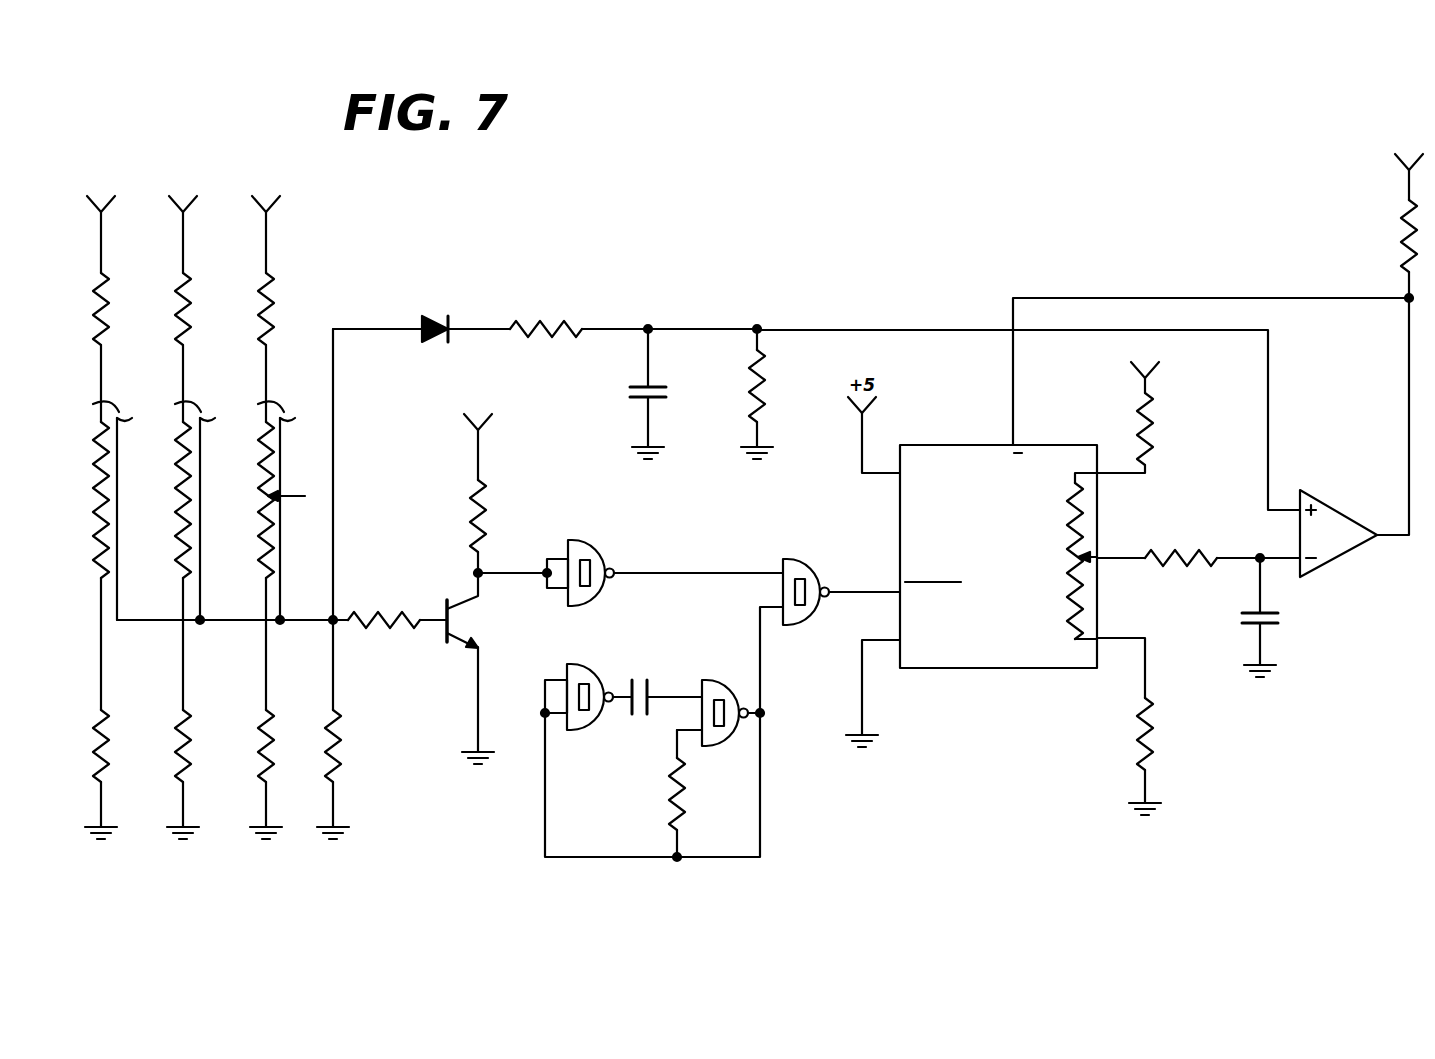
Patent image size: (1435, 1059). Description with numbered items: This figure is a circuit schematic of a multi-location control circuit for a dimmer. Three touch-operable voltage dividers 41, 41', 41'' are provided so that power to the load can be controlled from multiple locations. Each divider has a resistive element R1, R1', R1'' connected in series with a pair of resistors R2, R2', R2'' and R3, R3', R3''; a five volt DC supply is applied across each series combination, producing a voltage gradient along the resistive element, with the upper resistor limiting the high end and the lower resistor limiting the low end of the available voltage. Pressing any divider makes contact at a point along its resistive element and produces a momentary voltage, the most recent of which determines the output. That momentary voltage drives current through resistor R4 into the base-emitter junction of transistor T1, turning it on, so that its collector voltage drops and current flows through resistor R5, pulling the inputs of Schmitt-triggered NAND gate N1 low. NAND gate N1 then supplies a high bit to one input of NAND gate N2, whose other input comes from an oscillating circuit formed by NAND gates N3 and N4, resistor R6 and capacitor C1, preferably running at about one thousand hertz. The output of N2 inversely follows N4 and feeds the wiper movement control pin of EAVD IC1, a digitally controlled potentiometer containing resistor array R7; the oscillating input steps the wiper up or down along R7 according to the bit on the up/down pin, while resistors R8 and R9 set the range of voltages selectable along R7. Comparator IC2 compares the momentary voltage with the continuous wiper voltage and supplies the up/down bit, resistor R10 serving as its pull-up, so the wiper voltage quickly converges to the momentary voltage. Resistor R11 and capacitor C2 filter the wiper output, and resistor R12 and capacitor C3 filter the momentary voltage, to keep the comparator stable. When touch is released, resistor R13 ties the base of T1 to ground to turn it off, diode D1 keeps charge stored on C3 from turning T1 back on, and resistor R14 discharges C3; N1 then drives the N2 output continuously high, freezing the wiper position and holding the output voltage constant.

The membrane voltage divider 41 is at (117, 498).
The touch-operable voltage divider 41' is at (202, 498).
The touch-operable voltage divider 41'' is at (286, 498).
The resistive element R1 is at (85, 500).
The resistive element R1' is at (165, 500).
The resistive element R1'' is at (262, 500).
The resistor R2 is at (112, 256).
The resistor R2' is at (196, 256).
The resistor R2'' is at (281, 256).
The resistor R3 is at (115, 746).
The resistor R3' is at (199, 746).
The resistor R3'' is at (284, 746).
The resistor R4 is at (384, 610).
The resistor R5 is at (490, 472).
The resistor R6 is at (691, 794).
The resistor array R7 is at (1062, 556).
The resistor R8 is at (1159, 734).
The resistor R9 is at (1156, 402).
The pull-up resistor R10 is at (1389, 201).
The resistor R11 is at (1181, 549).
The resistor R12 is at (546, 317).
The resistor R13 is at (352, 746).
The resistor R14 is at (777, 386).
The capacitor C1 is at (634, 710).
The capacitor C2 is at (1274, 621).
The capacitor C3 is at (630, 396).
The diode D1 is at (437, 316).
The transistor T1 is at (472, 610).
The NAND gate N1 is at (578, 563).
The NAND gate N2 is at (806, 582).
The NAND gate N3 is at (577, 687).
The NAND gate N4 is at (725, 701).
The EAVD IC1 is at (1000, 559).
The comparator IC2 is at (1338, 530).